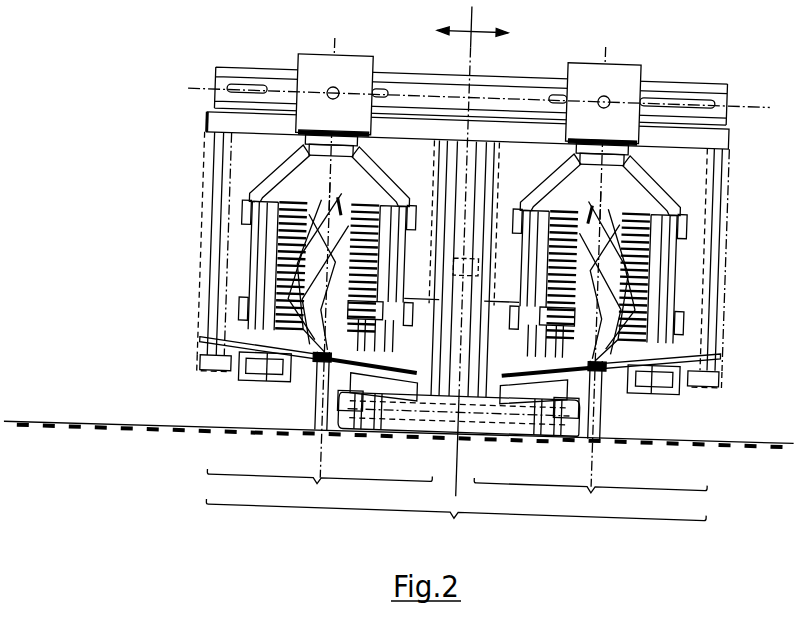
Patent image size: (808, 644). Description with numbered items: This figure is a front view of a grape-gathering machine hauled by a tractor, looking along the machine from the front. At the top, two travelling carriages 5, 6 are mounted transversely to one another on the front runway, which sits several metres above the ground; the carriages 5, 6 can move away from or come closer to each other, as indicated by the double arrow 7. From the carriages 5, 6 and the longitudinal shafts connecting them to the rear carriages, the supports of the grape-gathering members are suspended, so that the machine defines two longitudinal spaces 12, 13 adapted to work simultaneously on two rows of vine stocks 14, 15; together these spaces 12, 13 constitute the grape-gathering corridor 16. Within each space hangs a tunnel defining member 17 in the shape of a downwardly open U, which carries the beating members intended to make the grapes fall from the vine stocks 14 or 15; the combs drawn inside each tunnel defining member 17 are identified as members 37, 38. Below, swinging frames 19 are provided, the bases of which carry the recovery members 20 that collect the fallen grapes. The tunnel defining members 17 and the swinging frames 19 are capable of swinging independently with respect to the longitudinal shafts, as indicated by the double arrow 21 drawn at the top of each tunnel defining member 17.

The travelling carriage 5 is at (364, 70).
The travelling carriage 6 is at (633, 69).
The double arrow 7 is at (473, 26).
The longitudinal space 12 is at (319, 489).
The longitudinal space 13 is at (590, 499).
The row of vine stocks 14 is at (325, 343).
The row of vine stocks 15 is at (609, 353).
The grape-gathering corridor 16 is at (455, 524).
The tunnel defining member 17 is at (270, 182).
The swinging frame 19 is at (221, 272).
The recovery member 20 is at (345, 362).
The double arrow 21 is at (355, 182).
The inner comb plate 37 is at (360, 203).
The outer comb plate 38 is at (290, 203).